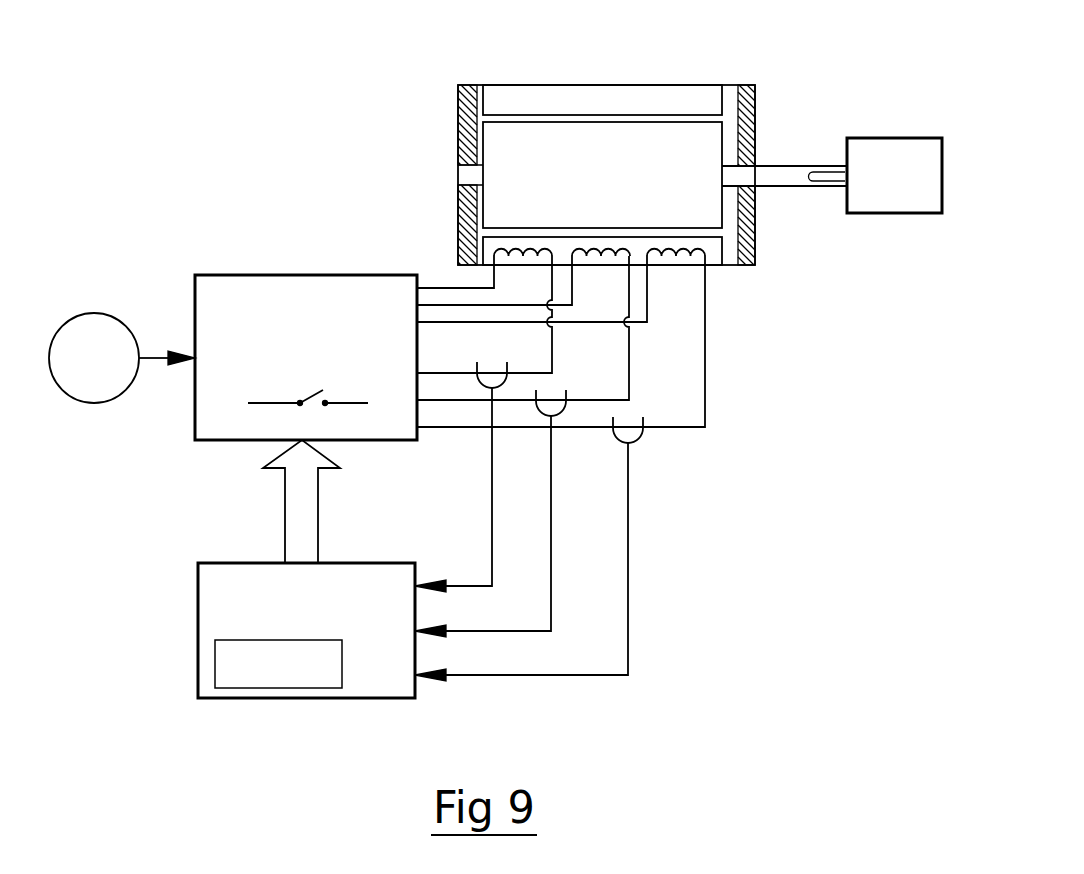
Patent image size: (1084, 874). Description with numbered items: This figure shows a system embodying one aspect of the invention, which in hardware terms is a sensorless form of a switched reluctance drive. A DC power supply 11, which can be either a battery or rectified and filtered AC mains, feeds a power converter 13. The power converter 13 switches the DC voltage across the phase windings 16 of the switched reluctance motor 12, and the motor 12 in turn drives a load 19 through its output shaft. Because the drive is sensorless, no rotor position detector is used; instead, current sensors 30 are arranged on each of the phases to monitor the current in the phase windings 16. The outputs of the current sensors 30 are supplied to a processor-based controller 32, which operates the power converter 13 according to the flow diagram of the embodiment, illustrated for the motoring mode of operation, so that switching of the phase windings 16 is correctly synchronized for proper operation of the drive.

The power supply 11 is at (93, 308).
The switched reluctance motor 12 is at (563, 82).
The power converter 13 is at (245, 270).
The phase windings 16 is at (682, 243).
The load 19 is at (863, 147).
The current sensors 30 is at (677, 470).
The processor-based controller 32 is at (195, 585).